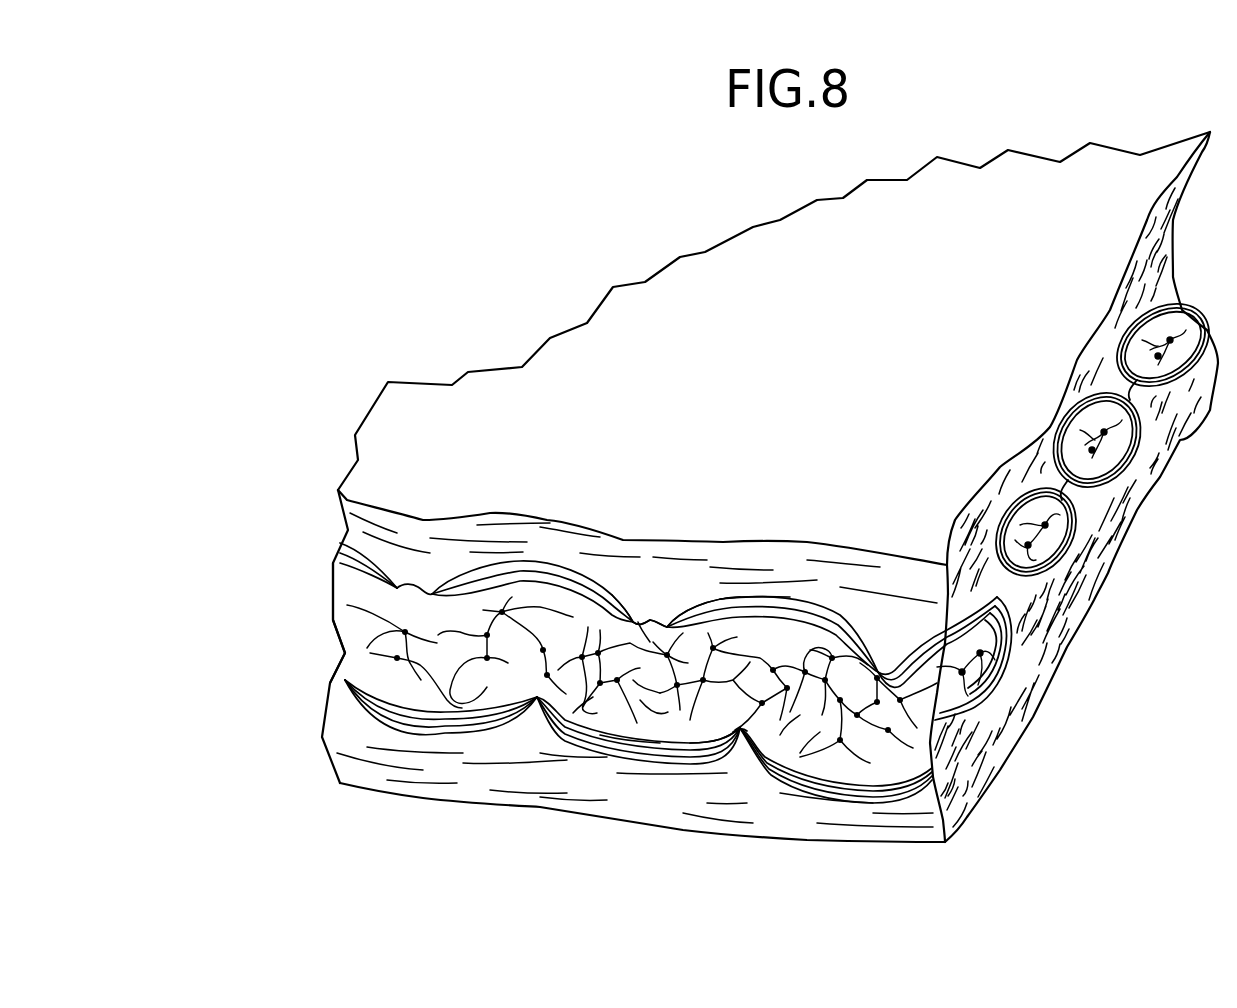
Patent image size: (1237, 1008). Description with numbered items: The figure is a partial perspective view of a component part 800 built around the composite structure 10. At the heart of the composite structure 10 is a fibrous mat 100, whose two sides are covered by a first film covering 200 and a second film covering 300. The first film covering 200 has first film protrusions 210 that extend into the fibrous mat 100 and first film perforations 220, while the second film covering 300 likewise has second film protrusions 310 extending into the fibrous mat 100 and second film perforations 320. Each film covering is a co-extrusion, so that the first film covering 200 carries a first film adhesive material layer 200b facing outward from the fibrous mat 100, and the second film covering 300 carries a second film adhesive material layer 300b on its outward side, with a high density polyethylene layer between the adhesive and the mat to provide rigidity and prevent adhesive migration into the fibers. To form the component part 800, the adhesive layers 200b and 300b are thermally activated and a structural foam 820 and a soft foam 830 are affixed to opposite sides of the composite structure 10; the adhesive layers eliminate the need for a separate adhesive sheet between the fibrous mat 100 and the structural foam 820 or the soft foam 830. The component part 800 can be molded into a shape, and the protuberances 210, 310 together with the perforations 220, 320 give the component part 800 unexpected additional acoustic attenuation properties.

The component part 800 is at (467, 226).
The structural foam 820 is at (334, 527).
The composite structure 10 is at (323, 653).
The first film covering 200 is at (333, 565).
The first film protrusions 210 is at (630, 617).
The first film perforations 220 is at (670, 620).
The first film adhesive material layer 200b is at (760, 603).
The fibrous mat 100 is at (333, 610).
The second film covering 300 is at (378, 712).
The second film protrusions 310 is at (727, 743).
The second film adhesive material layer 300b is at (618, 753).
The second film perforations 320 is at (745, 748).
The soft foam 830 is at (324, 767).